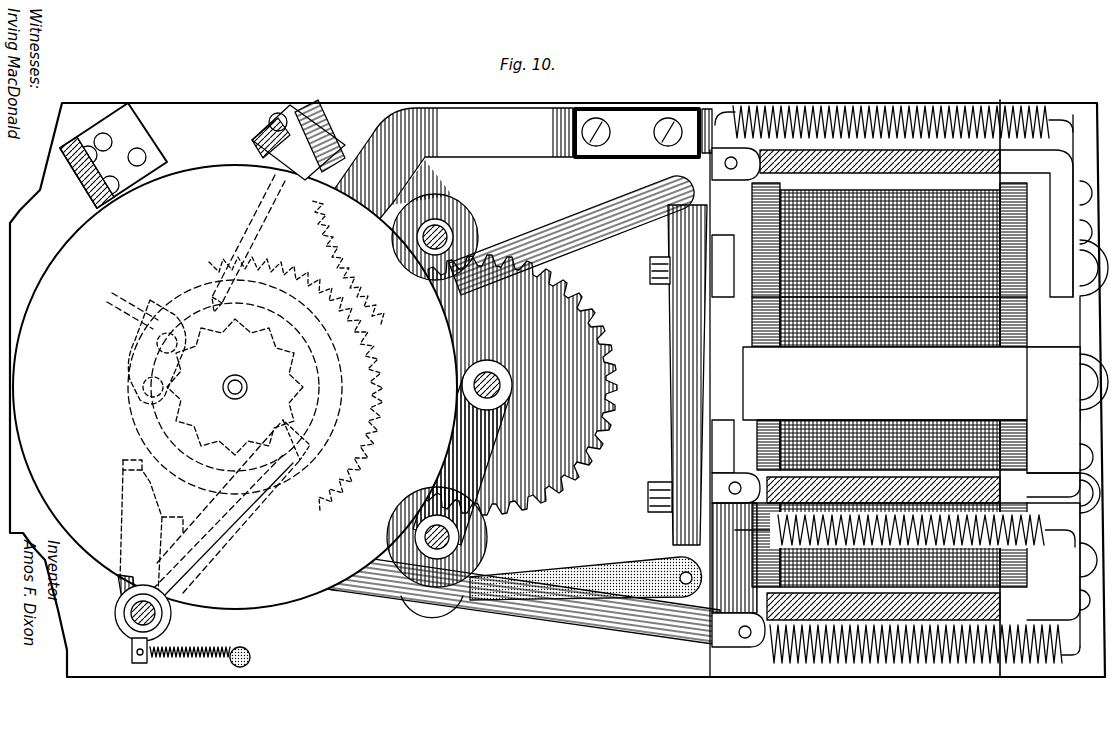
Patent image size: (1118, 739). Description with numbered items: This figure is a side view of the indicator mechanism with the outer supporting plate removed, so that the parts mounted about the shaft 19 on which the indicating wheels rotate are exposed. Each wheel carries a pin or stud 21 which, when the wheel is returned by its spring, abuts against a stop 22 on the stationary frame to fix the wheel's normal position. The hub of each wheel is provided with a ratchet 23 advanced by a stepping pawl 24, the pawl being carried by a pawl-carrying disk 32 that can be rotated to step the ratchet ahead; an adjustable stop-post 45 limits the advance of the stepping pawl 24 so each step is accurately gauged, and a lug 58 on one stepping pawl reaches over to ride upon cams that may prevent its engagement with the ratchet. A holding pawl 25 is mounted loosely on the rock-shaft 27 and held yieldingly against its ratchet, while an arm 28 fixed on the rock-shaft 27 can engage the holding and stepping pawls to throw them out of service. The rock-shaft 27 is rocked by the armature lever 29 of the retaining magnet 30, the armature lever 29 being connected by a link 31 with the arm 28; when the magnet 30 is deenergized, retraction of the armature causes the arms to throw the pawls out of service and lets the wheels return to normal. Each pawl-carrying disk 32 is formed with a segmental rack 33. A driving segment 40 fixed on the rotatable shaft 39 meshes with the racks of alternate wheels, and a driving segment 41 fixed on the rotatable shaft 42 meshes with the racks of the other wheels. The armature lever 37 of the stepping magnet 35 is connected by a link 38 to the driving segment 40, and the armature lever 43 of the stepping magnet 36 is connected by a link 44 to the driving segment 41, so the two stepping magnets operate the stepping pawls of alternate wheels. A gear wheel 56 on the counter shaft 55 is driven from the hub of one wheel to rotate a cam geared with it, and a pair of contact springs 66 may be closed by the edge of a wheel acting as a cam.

The shaft 19 is at (235, 384).
The pin or stud 21 is at (113, 155).
The stop 22 is at (82, 195).
The ratchet 23 is at (235, 387).
The stepping pawl 24 is at (181, 352).
The holding pawl 25 is at (233, 506).
The rock-shaft 27 is at (160, 617).
The arm 28 is at (120, 586).
The armature lever 29 is at (712, 440).
The retaining magnet 30 is at (834, 418).
The link 31 is at (419, 585).
The pawl-carrying disk 32 is at (158, 526).
The segmental rack 33 is at (304, 370).
The stepping magnet 35 is at (760, 214).
The stepping magnet 36 is at (897, 384).
The armature lever 37 is at (652, 536).
The link 38 is at (586, 573).
The rotatable shaft 39 is at (450, 540).
The driving segment 40 is at (430, 622).
The driving segment 41 is at (443, 186).
The rotatable shaft 42 is at (449, 236).
The armature lever 43 is at (676, 383).
The link 44 is at (568, 234).
The adjustable stop-post 45 is at (248, 214).
The counter shaft 55 is at (478, 380).
The gear wheel 56 is at (600, 433).
The lug 58 is at (118, 300).
The contact springs 66 is at (446, 185).